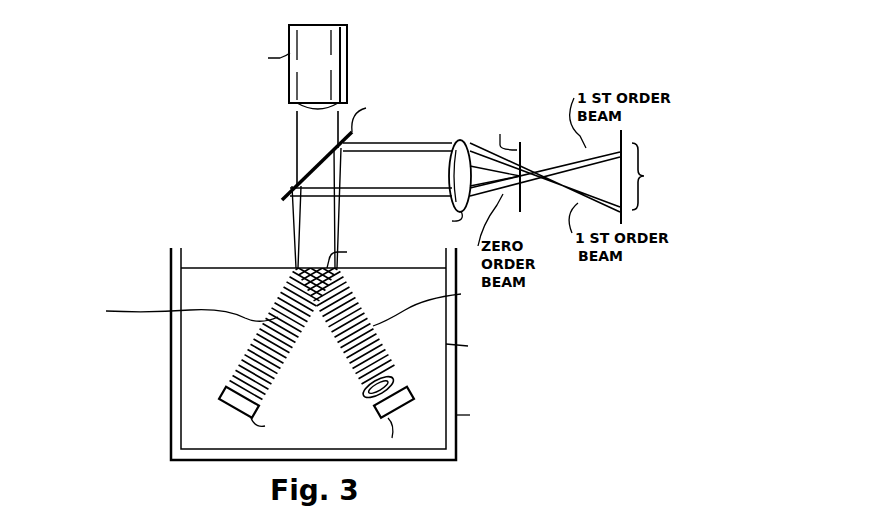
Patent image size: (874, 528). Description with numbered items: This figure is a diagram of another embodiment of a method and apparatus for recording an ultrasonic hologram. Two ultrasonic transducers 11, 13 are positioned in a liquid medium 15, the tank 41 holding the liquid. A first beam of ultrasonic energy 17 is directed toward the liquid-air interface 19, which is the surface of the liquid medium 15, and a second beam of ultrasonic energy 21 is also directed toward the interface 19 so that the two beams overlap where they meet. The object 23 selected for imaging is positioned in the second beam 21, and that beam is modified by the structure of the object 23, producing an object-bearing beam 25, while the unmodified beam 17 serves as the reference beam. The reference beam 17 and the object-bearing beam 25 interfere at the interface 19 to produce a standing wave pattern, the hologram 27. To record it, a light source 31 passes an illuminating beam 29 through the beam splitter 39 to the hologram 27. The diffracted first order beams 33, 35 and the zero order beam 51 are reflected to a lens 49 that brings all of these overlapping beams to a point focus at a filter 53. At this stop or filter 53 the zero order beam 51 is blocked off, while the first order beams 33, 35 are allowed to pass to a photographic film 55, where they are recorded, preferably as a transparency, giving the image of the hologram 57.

The light source 31 is at (290, 84).
The illuminating beam 29 is at (297, 142).
The beam splitter 39 is at (292, 191).
The hologram 27 is at (306, 265).
The zero order beam 51 is at (460, 143).
The lens 49 is at (467, 146).
The first order beam 33 is at (557, 164).
The first order beam 35 is at (526, 196).
The filter 53 is at (519, 212).
The photographic film 55 is at (628, 210).
The image of hologram 57 is at (638, 160).
The tank 41 is at (457, 438).
The liquid medium 15 is at (446, 322).
The liquid-air interface 19 is at (250, 268).
The first beam of ultrasonic energy 17 is at (253, 346).
The object-bearing beam 25 is at (462, 317).
The second beam of ultrasonic energy 21 is at (398, 395).
The object 23 is at (392, 383).
The ultrasonic transducer 11 is at (221, 395).
The ultrasonic transducer 13 is at (401, 418).